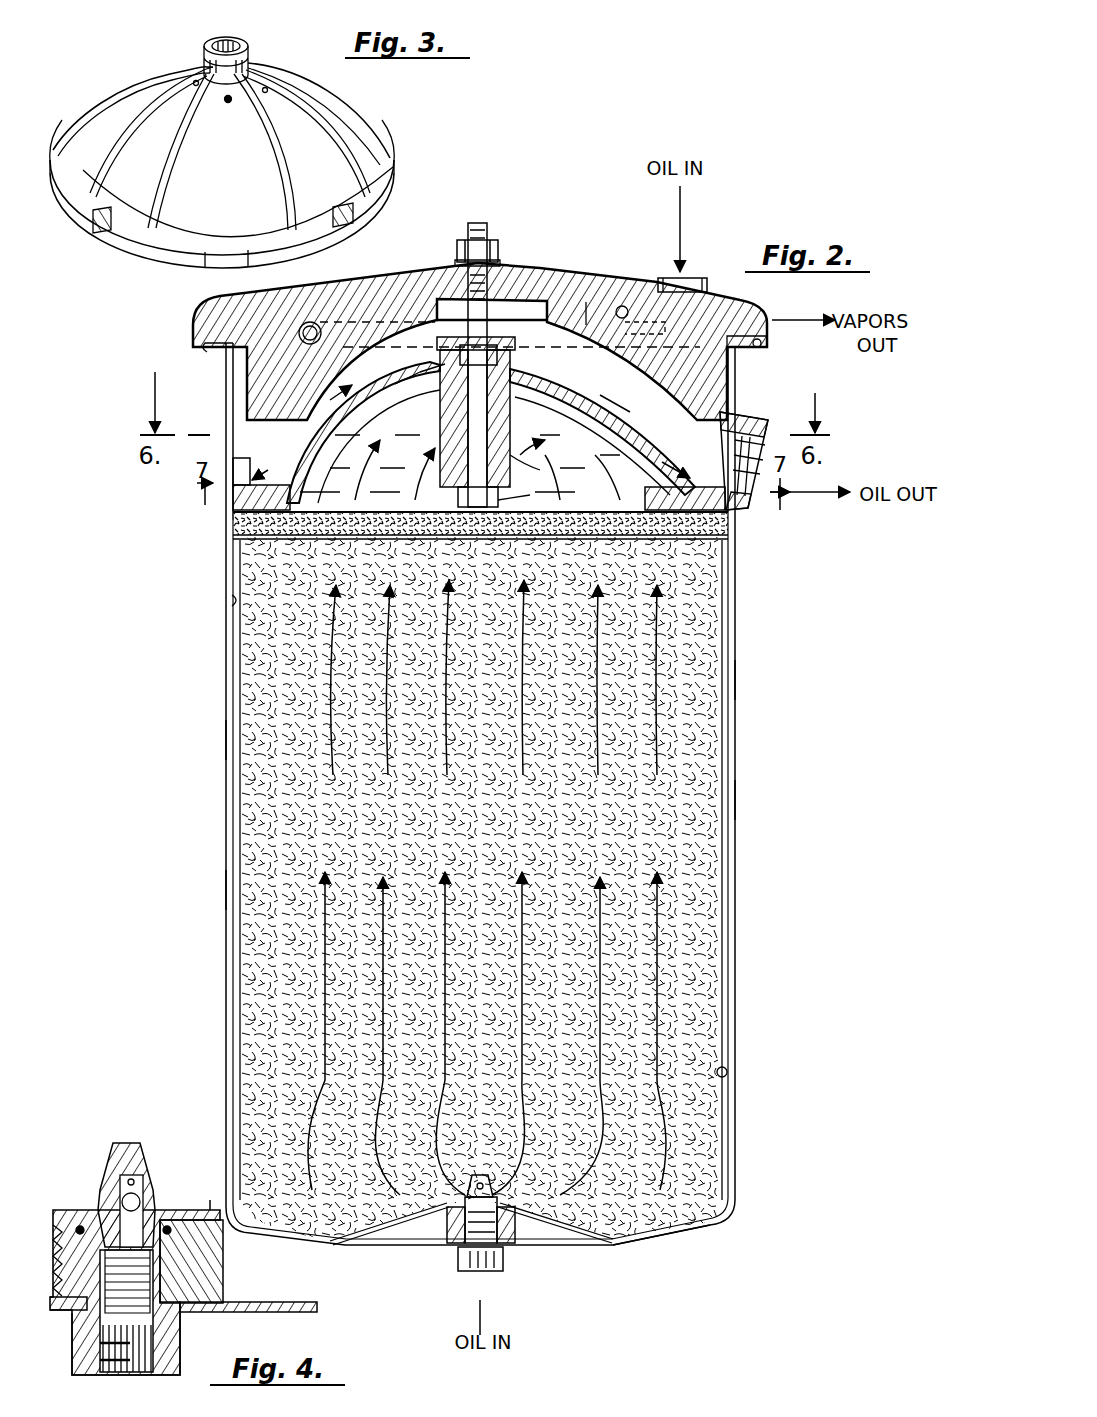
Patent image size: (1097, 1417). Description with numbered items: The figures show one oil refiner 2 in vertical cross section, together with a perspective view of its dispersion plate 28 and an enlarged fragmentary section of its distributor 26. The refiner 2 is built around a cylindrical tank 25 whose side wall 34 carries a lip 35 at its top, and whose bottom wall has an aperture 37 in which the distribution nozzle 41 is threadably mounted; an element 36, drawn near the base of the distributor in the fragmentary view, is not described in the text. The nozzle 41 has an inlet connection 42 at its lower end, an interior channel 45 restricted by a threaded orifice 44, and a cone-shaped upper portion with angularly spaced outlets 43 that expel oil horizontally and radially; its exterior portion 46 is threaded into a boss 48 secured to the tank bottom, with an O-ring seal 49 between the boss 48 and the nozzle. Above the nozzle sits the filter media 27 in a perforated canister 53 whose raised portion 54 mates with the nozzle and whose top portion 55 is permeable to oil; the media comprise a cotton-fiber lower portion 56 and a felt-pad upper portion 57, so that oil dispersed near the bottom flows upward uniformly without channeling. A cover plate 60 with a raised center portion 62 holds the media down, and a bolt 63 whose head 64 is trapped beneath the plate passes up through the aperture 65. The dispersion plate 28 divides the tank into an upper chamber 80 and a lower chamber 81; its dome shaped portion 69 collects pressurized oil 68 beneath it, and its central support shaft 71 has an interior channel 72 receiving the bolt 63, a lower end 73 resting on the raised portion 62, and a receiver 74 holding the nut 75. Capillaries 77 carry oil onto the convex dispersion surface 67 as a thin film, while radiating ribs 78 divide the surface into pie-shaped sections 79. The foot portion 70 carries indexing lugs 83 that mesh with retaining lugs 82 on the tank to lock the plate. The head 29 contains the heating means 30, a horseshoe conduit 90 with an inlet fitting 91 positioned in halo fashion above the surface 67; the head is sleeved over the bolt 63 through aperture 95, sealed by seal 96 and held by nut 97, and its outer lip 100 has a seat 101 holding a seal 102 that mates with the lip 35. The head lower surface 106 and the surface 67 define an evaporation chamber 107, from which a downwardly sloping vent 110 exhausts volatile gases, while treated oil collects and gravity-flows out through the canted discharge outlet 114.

In FIG. 2, the refiner 2 is at (226, 885).
In FIG. 2, the tank 25 is at (736, 990).
In FIG. 4, the tank 25 is at (248, 1313).
In FIG. 2, the oil inlet distributor 26 is at (512, 1255).
In FIG. 4, the oil inlet distributor 26 is at (110, 1163).
In FIG. 2, the filter media 27 is at (736, 797).
In FIG. 3, the dispersion plate 28 is at (345, 118).
In FIG. 2, the dispersion plate 28 is at (645, 437).
In FIG. 2, the head 29 is at (555, 290).
In FIG. 2, the heating means 30 is at (708, 286).
In FIG. 2, the side wall 34 is at (226, 735).
In FIG. 2, the lip 35 is at (207, 348).
In FIG. 4, the mounting bracket 36 is at (58, 1310).
In FIG. 2, the tank bottom wall aperture 37 is at (640, 1237).
In FIG. 4, the tank bottom wall aperture 37 is at (76, 1345).
In FIG. 4, the distribution nozzle 41 is at (143, 1212).
In FIG. 4, the inlet connection 42 is at (152, 1372).
In FIG. 4, the outlets 43 is at (105, 1208).
In FIG. 4, the orifice 44 is at (88, 1216).
In FIG. 4, the interior channel 45 is at (168, 1222).
In FIG. 4, the exterior portion 46 is at (60, 1267).
In FIG. 4, the boss 48 is at (224, 1267).
In FIG. 4, the O-ring seal 49 is at (60, 1230).
In FIG. 2, the canister 53 is at (728, 1070).
In FIG. 2, the raised portion 54 is at (570, 1245).
In FIG. 4, the raised portion 54 is at (210, 1210).
In FIG. 2, the top portion 55 is at (235, 540).
In FIG. 2, the filter media lower portion 56 is at (736, 683).
In FIG. 2, the filter media upper portion 57 is at (735, 550).
In FIG. 2, the cover plate 60 is at (366, 445).
In FIG. 2, the raised center portion 62 is at (400, 447).
In FIG. 2, the bolt 63 is at (510, 440).
In FIG. 2, the head of bolt 64 is at (512, 500).
In FIG. 2, the aperture 65 is at (470, 470).
In FIG. 2, the dispersion surface 67 is at (390, 387).
In FIG. 2, the oil 68 is at (560, 480).
In FIG. 3, the dome shaped portion 69 is at (143, 98).
In FIG. 2, the dome shaped portion 69 is at (402, 416).
In FIG. 3, the foot portion 70 is at (355, 142).
In FIG. 2, the foot portion 70 is at (730, 537).
In FIG. 3, the support shaft 71 is at (250, 62).
In FIG. 2, the support shaft 71 is at (445, 440).
In FIG. 2, the interior vertical channel 72 is at (492, 435).
In FIG. 2, the lower end of support shaft 73 is at (515, 488).
In FIG. 3, the receiver 74 is at (225, 38).
In FIG. 2, the receiver 74 is at (498, 345).
In FIG. 2, the nut 75 is at (463, 347).
In FIG. 3, the capillaries 77 is at (228, 103).
In FIG. 3, the ribs 78 is at (292, 165).
In FIG. 2, the ribs 78 is at (318, 412).
In FIG. 3, the sections 79 is at (165, 157).
In FIG. 2, the upper chamber 80 is at (222, 400).
In FIG. 2, the lower chamber 81 is at (226, 603).
In FIG. 2, the retaining lugs 82 is at (238, 478).
In FIG. 3, the indexing lugs 83 is at (393, 185).
In FIG. 2, the indexing lugs 83 is at (230, 512).
In FIG. 2, the conduit 90 is at (316, 322).
In FIG. 2, the inlet fitting 91 is at (682, 276).
In FIG. 2, the aperture 95 is at (470, 285).
In FIG. 2, the seal 96 is at (490, 268).
In FIG. 2, the nut 97 is at (487, 260).
In FIG. 2, the outer lip 100 is at (762, 347).
In FIG. 2, the seat 101 is at (742, 357).
In FIG. 2, the seal 102 is at (768, 343).
In FIG. 2, the lower surface 106 is at (586, 302).
In FIG. 2, the evaporation chamber 107 is at (605, 375).
In FIG. 2, the vent 110 is at (623, 305).
In FIG. 2, the discharge outlet 114 is at (752, 420).